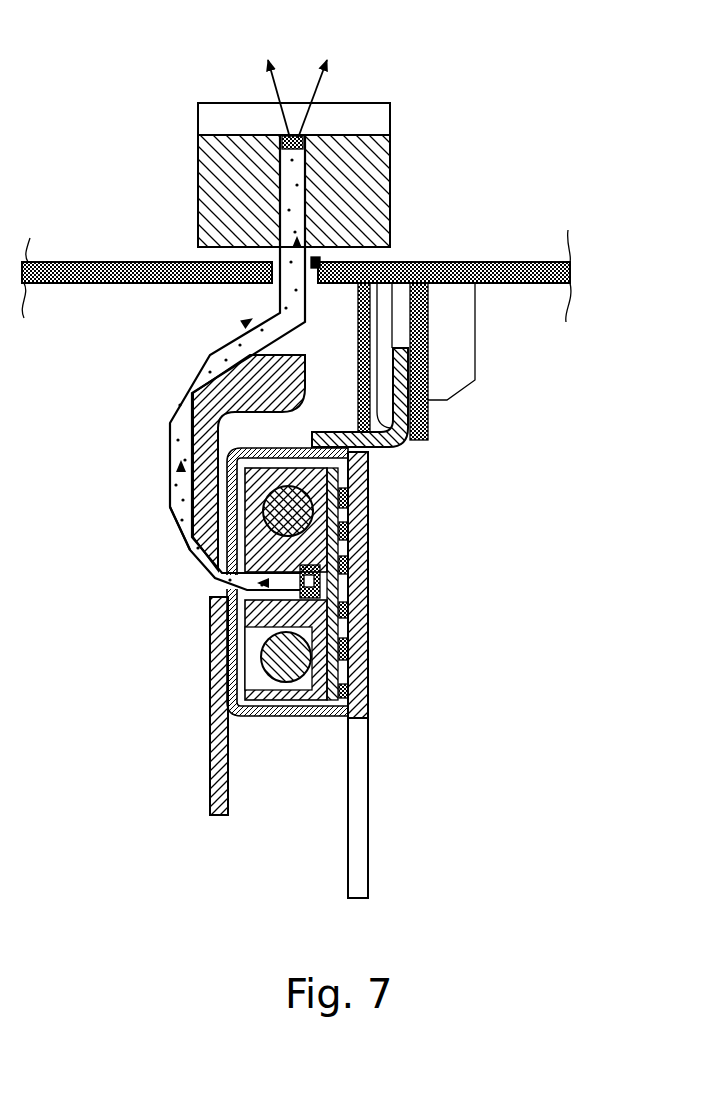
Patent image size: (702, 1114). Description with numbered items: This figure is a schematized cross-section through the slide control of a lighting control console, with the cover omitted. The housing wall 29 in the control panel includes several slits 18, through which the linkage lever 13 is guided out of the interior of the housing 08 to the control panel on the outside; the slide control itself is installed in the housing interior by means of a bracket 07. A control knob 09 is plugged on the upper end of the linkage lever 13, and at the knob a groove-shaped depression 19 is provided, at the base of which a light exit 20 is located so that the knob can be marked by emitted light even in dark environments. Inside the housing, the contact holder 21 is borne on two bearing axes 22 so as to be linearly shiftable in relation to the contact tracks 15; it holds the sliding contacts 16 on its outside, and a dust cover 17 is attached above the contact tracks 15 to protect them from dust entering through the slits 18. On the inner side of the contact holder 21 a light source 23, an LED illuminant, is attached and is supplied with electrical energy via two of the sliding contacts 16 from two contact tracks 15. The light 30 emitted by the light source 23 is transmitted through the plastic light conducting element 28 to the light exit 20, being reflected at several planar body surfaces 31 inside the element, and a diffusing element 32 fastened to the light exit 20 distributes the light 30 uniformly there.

The bracket 07 is at (392, 440).
The housing 08 is at (103, 310).
The control knob 09 is at (388, 193).
The linkage lever 13 is at (278, 399).
The contact tracks 15 is at (345, 625).
The sliding contacts 16 is at (340, 666).
The dust cover 17 is at (248, 718).
The slits 18 is at (320, 262).
The groove-shaped depression 19 is at (365, 118).
The light exit 20 is at (299, 106).
The contact holder 21 is at (362, 693).
The bearing axes 22 is at (300, 510).
The light source 23 is at (322, 578).
The light conducting element 28 is at (178, 468).
The housing wall 29 is at (522, 262).
The light 30 is at (187, 507).
The planar body surfaces 31 is at (193, 380).
The diffusing element 32 is at (306, 130).